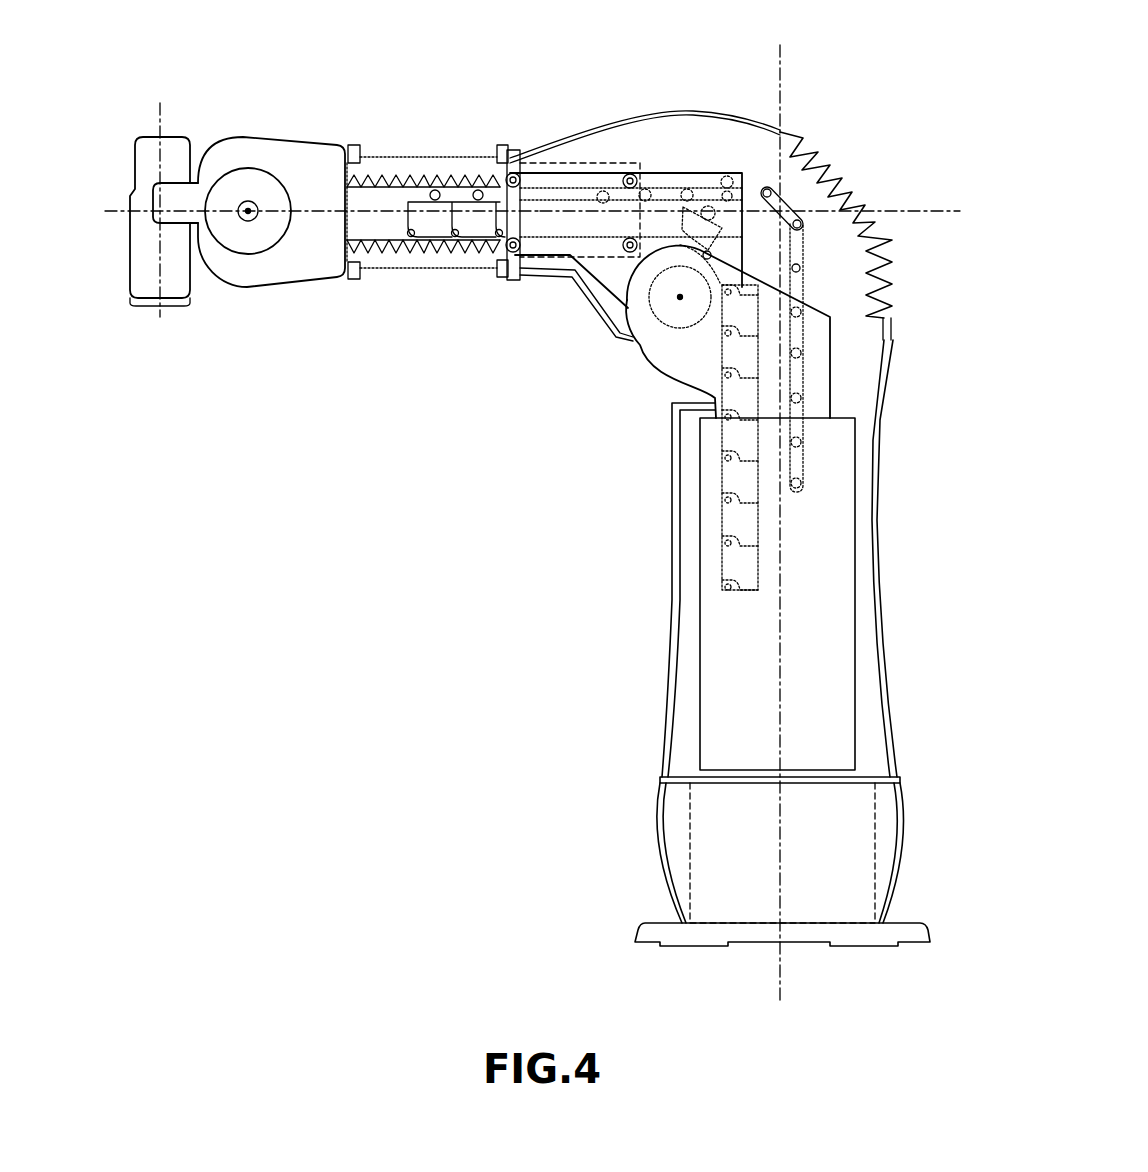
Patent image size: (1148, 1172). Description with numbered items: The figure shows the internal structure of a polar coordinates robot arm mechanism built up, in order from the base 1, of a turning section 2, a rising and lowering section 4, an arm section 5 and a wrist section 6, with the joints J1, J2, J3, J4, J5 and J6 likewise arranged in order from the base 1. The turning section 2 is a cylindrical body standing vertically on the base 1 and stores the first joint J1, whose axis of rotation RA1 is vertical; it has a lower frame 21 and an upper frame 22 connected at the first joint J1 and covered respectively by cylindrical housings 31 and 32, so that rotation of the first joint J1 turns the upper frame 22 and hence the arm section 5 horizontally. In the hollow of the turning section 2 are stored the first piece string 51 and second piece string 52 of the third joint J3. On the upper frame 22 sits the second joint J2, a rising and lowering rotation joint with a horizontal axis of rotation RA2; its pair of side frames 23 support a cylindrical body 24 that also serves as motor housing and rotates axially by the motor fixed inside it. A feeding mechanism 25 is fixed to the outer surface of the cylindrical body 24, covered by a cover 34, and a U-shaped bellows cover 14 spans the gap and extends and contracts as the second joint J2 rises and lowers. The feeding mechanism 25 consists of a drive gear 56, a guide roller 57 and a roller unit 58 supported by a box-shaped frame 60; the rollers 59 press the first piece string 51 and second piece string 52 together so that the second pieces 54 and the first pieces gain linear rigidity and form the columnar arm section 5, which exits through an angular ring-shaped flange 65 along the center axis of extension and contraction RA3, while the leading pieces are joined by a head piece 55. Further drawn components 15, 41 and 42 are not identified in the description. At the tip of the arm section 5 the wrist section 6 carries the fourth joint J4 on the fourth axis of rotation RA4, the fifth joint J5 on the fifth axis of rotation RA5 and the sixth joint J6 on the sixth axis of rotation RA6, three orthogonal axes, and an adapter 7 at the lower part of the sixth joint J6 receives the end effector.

The base 1 is at (912, 925).
The turning section 2 is at (909, 589).
The rising and lowering section 4 is at (866, 170).
The arm section 5 is at (468, 144).
The wrist section 6 is at (279, 90).
The adapter 7 is at (185, 304).
The U-shaped bellows cover 14 is at (870, 250).
The inner arm 15 is at (410, 170).
The lower frame 21 is at (690, 797).
The upper frame 22 is at (685, 428).
The side frames 23 is at (672, 373).
The cylindrical body 24 is at (658, 323).
The feeding mechanism 25 is at (563, 267).
The cylindrical housing 31 is at (660, 866).
The cylindrical housing 32 is at (672, 700).
The cover 34 is at (586, 138).
The bracket 41 is at (504, 144).
The bracket 42 is at (349, 143).
The first piece string 51 is at (796, 516).
The second piece string 52 is at (739, 608).
The second piece 54 is at (720, 558).
The head piece 55 is at (400, 255).
The drive gear 56 is at (690, 193).
The guide roller 57 is at (727, 178).
The roller unit 58 is at (611, 165).
The rollers 59 is at (530, 175).
The box-shaped frame 60 is at (592, 287).
The flange 65 is at (514, 150).
The first joint J1 is at (910, 782).
The second joint J2 is at (642, 322).
The third joint J3 is at (494, 216).
The fourth joint J4 is at (358, 203).
The fifth joint J5 is at (267, 258).
The sixth joint J6 is at (122, 302).
The axis of rotation RA1 is at (778, 518).
The axis of rotation RA2 is at (680, 297).
The center axis of extension and contraction RA3 is at (290, 197).
The fourth axis of rotation RA4 is at (521, 197).
The fifth axis of rotation RA5 is at (250, 212).
The sixth axis of rotation RA6 is at (163, 196).